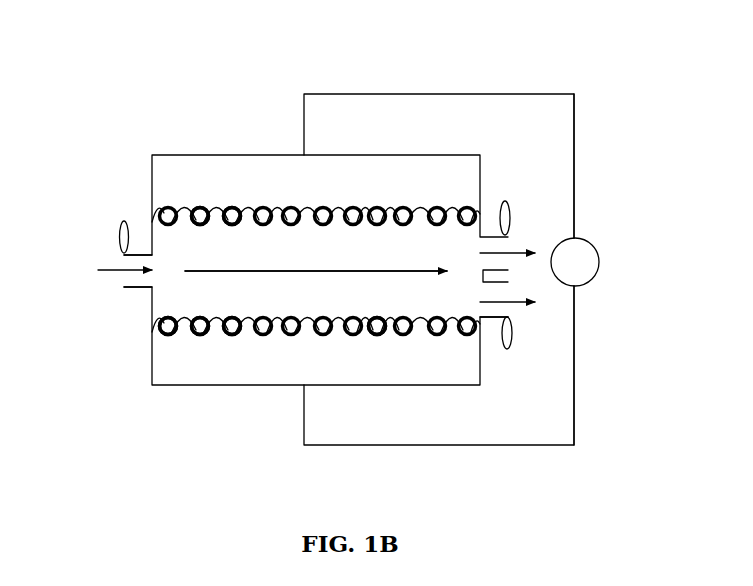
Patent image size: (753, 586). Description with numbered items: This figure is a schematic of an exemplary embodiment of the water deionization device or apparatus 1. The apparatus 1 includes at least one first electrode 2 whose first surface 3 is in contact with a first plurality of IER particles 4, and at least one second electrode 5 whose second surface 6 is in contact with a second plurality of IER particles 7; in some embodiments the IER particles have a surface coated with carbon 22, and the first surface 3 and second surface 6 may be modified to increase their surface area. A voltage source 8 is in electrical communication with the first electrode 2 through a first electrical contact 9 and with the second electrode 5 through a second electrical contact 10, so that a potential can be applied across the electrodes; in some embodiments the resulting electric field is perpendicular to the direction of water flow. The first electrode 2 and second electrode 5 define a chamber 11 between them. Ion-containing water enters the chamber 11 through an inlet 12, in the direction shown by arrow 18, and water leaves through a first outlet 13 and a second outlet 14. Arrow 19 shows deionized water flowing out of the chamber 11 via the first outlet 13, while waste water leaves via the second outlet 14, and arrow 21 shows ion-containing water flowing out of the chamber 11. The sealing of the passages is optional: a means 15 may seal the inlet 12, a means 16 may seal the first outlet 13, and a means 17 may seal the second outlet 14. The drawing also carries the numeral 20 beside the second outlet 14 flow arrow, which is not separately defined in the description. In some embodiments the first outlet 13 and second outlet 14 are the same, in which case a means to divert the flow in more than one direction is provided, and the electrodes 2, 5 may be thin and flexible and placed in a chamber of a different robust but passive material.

The device or apparatus 1 is at (138, 111).
The first electrode 2 is at (290, 182).
The first surface 3 is at (282, 208).
The first plurality of IER particles 4 is at (200, 208).
The second electrode 5 is at (242, 350).
The second surface 6 is at (215, 335).
The second plurality of IER particles 7 is at (170, 335).
The voltage source 8 is at (599, 262).
The first electrical contact 9 is at (575, 218).
The second electrical contact 10 is at (575, 297).
The chamber 11 is at (312, 257).
The inlet 12 is at (118, 253).
The first outlet 13 is at (480, 237).
The second outlet 14 is at (505, 312).
The means for sealing the inlet 15 is at (120, 223).
The means for sealing the first outlet 16 is at (498, 235).
The means for sealing the second outlet 17 is at (512, 345).
The arrow 18 is at (120, 268).
The arrow 19 is at (491, 262).
The lower ion beam 20 is at (506, 325).
The arrow 21 is at (322, 272).
The carbon 22 is at (378, 317).